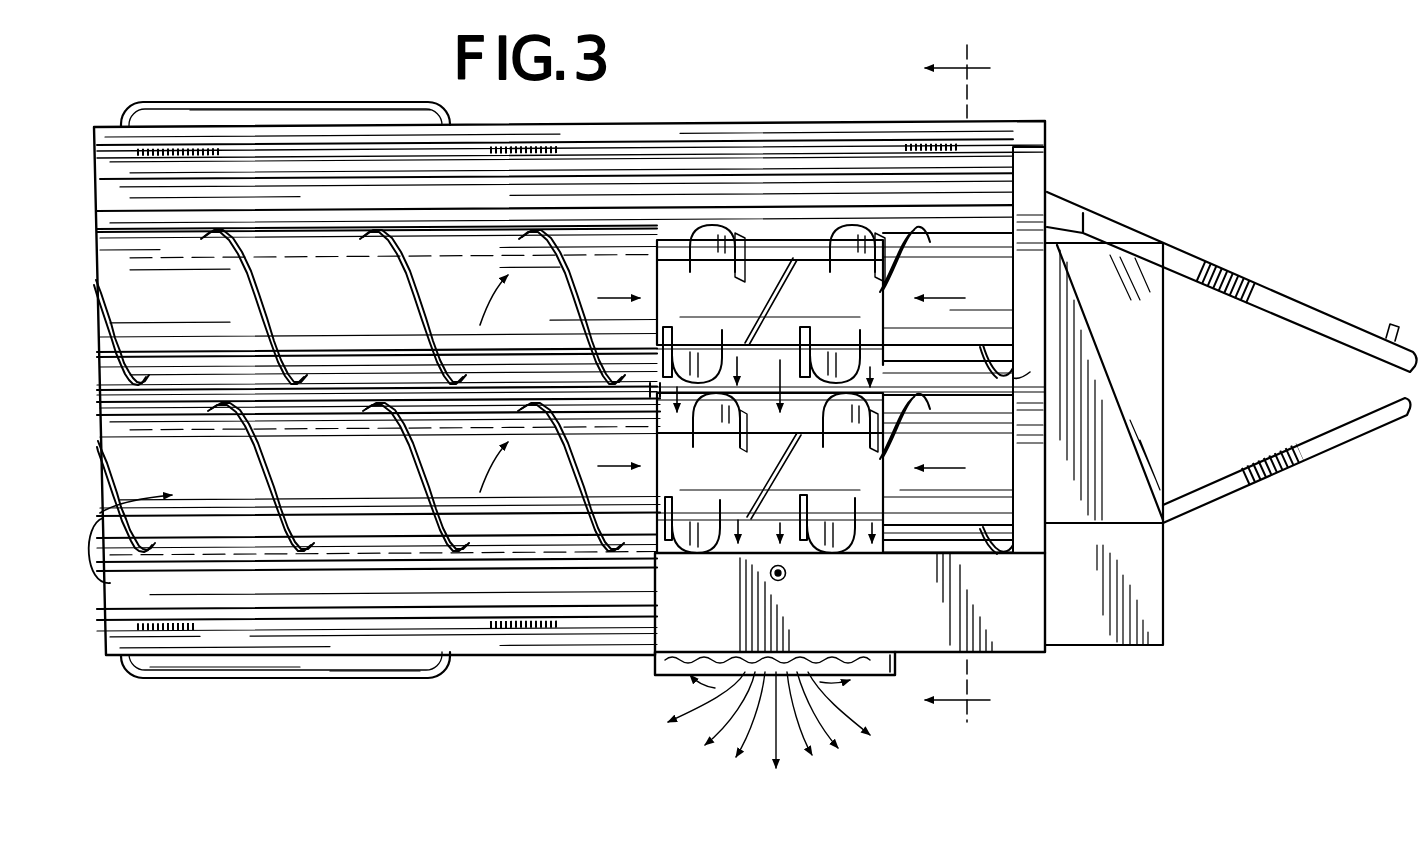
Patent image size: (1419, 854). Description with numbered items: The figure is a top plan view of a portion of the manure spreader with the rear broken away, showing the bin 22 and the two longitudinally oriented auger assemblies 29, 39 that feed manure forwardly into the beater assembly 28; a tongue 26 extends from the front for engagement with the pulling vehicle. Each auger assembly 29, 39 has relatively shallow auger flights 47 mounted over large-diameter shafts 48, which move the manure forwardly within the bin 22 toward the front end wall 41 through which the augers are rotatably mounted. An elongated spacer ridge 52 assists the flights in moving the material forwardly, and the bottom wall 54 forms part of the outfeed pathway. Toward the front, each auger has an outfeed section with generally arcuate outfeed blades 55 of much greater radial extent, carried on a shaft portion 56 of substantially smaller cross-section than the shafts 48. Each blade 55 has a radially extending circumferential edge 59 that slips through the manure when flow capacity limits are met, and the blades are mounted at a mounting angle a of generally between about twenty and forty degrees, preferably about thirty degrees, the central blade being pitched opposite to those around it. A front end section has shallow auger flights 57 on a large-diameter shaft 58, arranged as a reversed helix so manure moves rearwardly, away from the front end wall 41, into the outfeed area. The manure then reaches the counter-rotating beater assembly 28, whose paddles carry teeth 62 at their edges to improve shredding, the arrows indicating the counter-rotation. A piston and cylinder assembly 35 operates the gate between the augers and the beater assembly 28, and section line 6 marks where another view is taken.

The bin 22 is at (718, 123).
The auger assembly 29 is at (150, 292).
The front end wall 41 is at (1010, 199).
The shaft 48 is at (360, 312).
The shallow auger flight 47 is at (547, 235).
The spacer ridge 52 is at (126, 380).
The auger assembly 39 is at (110, 583).
The shaft portion 56 is at (730, 312).
The bottom wall 54 is at (778, 376).
The circumferential edge 59 is at (740, 250).
The outfeed blade 55 is at (793, 258).
The shaft 58 is at (1016, 302).
The shallow auger flight 57 is at (917, 228).
The mounting angle a is at (740, 465).
The beater assembly 28 is at (668, 659).
The piston and cylinder assembly 35 is at (787, 577).
The teeth 62 is at (861, 656).
The tongue 26 is at (1242, 478).
The section line 6- 6 is at (957, 383).